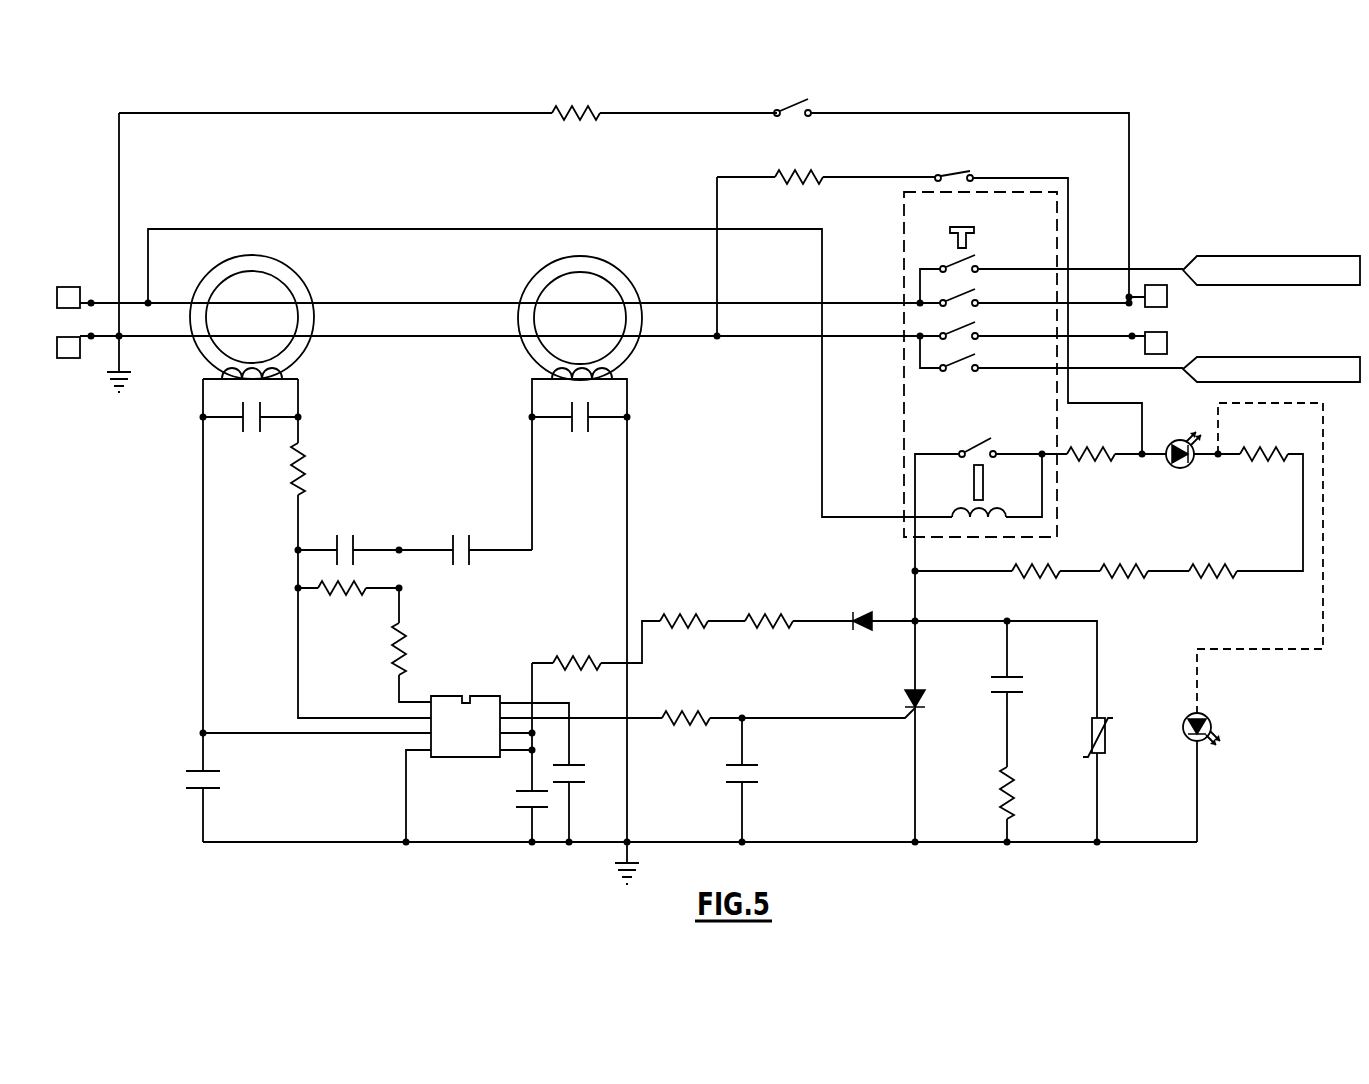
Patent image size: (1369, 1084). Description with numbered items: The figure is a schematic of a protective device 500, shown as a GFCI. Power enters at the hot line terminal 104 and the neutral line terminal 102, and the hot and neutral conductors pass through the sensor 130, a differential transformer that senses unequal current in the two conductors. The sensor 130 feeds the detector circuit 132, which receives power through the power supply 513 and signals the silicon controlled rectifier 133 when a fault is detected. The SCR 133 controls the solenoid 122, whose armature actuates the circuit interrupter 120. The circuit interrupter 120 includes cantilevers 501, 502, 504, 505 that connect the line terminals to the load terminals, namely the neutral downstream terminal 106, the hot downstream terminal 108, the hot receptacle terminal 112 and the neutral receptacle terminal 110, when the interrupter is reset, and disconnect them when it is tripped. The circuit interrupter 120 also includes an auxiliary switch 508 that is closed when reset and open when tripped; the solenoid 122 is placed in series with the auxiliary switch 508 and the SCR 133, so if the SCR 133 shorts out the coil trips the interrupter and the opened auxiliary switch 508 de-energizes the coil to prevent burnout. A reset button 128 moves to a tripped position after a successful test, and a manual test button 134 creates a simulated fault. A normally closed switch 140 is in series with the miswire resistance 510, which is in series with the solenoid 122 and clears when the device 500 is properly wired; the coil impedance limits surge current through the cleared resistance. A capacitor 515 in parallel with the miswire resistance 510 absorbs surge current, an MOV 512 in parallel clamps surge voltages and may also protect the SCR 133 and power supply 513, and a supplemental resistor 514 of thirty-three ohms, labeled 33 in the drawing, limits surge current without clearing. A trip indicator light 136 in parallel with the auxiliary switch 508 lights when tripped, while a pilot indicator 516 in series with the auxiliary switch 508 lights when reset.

The hot line terminal 104 is at (72, 223).
The neutral line terminal 102 is at (68, 422).
The sensor 130 is at (298, 270).
The test button 134 is at (790, 106).
The normally closed switch 140 is at (960, 170).
The miswire resistance 510 is at (828, 186).
The circuit interrupter 120 is at (902, 430).
The reset button 128 is at (962, 227).
The cantilever 501 is at (977, 262).
The cantilever 502 is at (978, 297).
The cantilever 504 is at (980, 328).
The cantilever 505 is at (980, 362).
The neutral downstream terminal 106 is at (1155, 283).
The hot downstream terminal 108 is at (1142, 353).
The hot receptacle terminal 112 is at (1318, 256).
The neutral receptacle terminal 110 is at (1318, 356).
The auxiliary switch 508 is at (992, 440).
The solenoid 122 is at (991, 507).
The supplemental resistor 514 is at (1090, 496).
The resistor R15 label 33 is at (1092, 459).
The trip indicator light 136 is at (1215, 510).
The power supply 513 is at (700, 608).
The detector circuit 132 is at (462, 696).
The silicon controlled rectifier 133 is at (910, 698).
The capacitor 515 is at (1014, 675).
The MOV 512 is at (1102, 718).
The pilot indicator 516 is at (1205, 716).
The device 500 is at (167, 630).